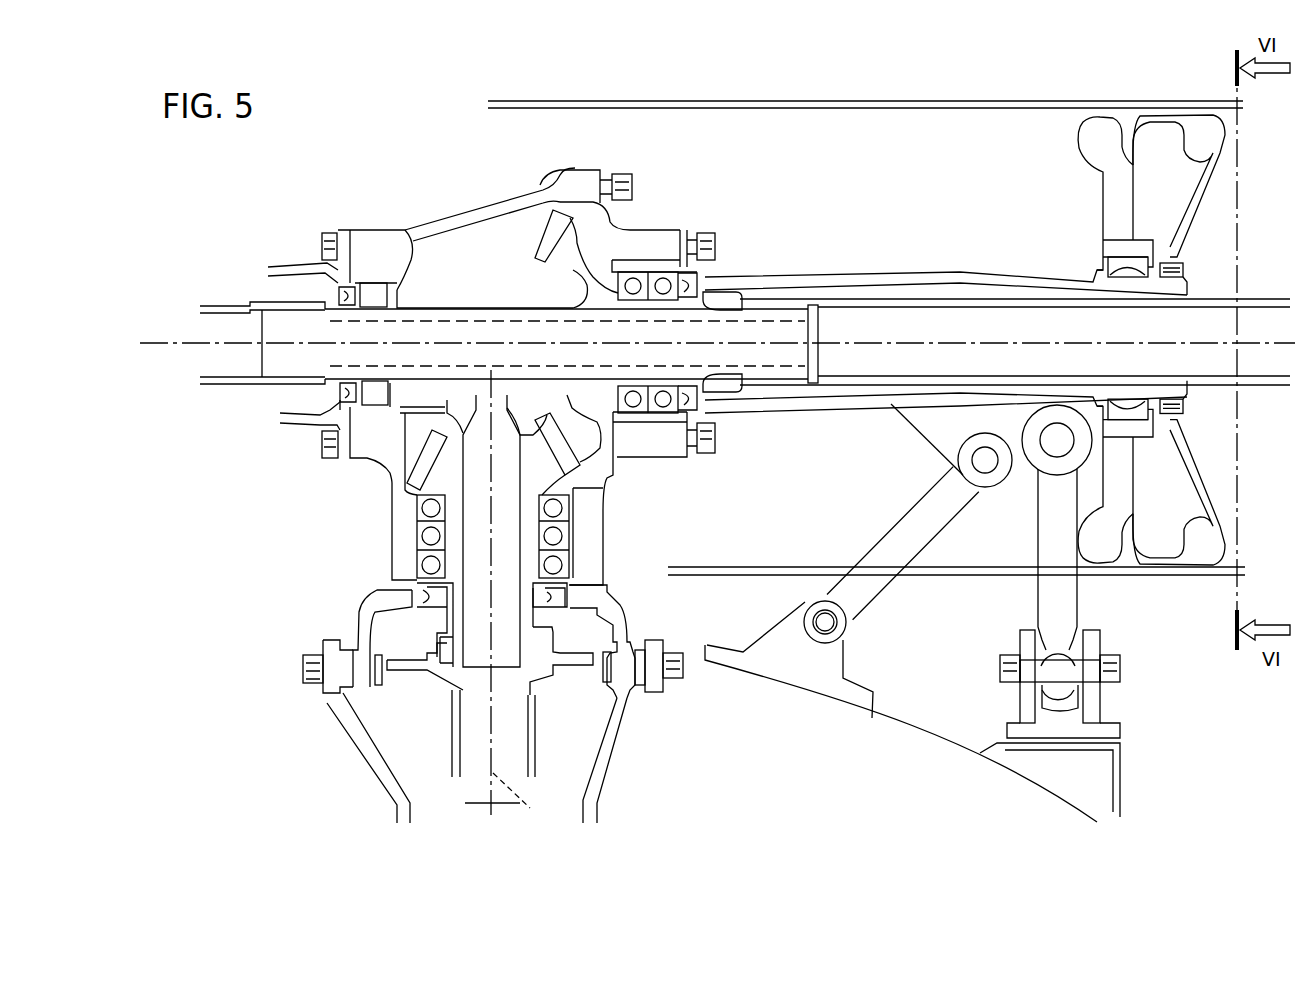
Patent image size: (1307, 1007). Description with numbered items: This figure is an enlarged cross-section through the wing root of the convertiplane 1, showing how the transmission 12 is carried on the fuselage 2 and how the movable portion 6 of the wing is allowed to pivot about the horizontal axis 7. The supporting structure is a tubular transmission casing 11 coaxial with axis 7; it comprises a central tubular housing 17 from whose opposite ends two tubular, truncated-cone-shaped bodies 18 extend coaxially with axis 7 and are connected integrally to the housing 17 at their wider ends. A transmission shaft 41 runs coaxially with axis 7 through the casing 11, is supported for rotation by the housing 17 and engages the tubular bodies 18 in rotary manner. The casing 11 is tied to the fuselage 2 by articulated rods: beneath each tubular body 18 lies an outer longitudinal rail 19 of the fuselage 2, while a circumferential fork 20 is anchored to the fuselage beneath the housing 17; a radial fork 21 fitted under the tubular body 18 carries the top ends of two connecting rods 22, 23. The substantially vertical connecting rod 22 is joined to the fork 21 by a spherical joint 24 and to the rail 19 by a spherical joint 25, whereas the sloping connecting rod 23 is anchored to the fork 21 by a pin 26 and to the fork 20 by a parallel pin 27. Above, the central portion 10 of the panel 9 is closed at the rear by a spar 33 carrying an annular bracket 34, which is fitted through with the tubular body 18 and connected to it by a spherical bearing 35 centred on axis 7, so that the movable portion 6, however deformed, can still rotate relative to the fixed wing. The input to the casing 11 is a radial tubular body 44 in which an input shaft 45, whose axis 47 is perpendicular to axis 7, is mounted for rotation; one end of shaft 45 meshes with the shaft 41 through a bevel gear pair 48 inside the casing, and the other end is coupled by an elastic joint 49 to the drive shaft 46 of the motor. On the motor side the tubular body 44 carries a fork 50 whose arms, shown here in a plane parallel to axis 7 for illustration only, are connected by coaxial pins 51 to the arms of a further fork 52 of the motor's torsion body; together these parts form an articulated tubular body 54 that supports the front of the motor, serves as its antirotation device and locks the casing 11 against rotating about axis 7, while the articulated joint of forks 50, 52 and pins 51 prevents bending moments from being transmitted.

The convertiplane 1 is at (347, 140).
The fuselage 2 is at (1057, 813).
The movable portion 6 is at (1113, 85).
The horizontal axis 7 is at (176, 347).
The panel 9 is at (935, 98).
The central portion 10 is at (770, 100).
The transmission casing 11 is at (442, 210).
The transmission 12 is at (466, 292).
The central tubular housing 17 is at (488, 212).
The tubular truncated-cone-shaped body 18 is at (280, 267).
The outer longitudinal rail 19 is at (1117, 717).
The circumferential fork 20 is at (777, 658).
The radial fork 21 is at (923, 422).
The connecting rod 22 is at (1072, 597).
The connecting rod 23 is at (908, 545).
The spherical joint 24 is at (1052, 443).
The spherical joint 25 is at (1100, 645).
The pin 26 is at (970, 465).
The pin 27 is at (823, 620).
The spar 33 is at (1008, 130).
The annular bracket 34 is at (1128, 197).
The spherical bearing 35 is at (1160, 253).
The transmission shaft 41 is at (653, 334).
The radial tubular body 44 is at (390, 543).
The input shaft 45 is at (528, 531).
The drive shaft 46 is at (533, 723).
The axis 47 is at (532, 812).
The bevel gear pair 48 is at (575, 463).
The elastic joint 49 is at (567, 627).
The fork 50 is at (367, 630).
The coaxial pin 51 is at (382, 673).
The further fork 52 is at (367, 767).
The articulated tubular body 54 is at (340, 748).